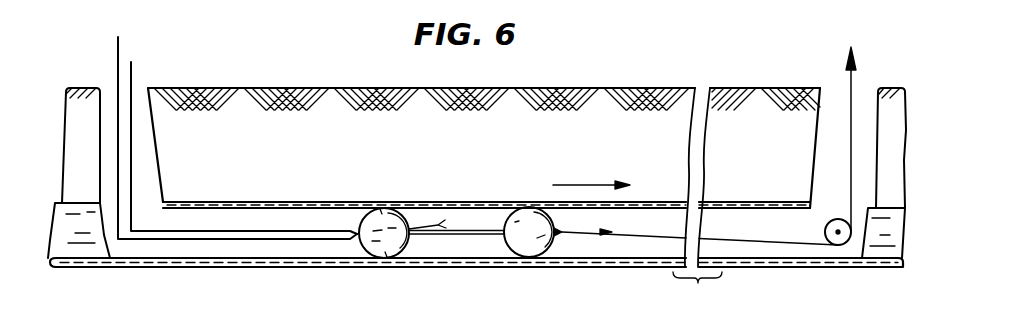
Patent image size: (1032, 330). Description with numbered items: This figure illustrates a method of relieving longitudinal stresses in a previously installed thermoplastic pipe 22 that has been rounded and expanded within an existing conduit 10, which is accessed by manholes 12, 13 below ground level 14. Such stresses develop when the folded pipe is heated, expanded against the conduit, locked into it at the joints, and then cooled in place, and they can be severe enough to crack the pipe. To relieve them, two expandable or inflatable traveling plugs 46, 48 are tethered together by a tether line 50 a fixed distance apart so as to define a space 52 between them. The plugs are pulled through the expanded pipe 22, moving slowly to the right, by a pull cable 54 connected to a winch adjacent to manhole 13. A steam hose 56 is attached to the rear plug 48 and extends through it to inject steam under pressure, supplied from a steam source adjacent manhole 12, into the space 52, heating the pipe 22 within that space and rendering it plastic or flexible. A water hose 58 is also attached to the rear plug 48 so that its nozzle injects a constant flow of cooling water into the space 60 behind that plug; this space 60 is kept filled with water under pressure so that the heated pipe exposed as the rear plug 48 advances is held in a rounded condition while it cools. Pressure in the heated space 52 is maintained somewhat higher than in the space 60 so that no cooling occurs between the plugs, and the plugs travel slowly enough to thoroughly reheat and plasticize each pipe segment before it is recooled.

The existing conduit 10 is at (528, 204).
The manhole 12 is at (156, 138).
The manhole 13 is at (813, 153).
The ground level 14 is at (223, 88).
The thermoplastic pipe 22 is at (619, 207).
The traveling plug 46 is at (522, 208).
The rear plug 48 is at (402, 207).
The tether line 50 is at (463, 229).
The space 52 is at (450, 249).
The pull cable 54 is at (779, 240).
The steam hose 56 is at (268, 230).
The water hose 58 is at (206, 241).
The space 60 is at (297, 249).